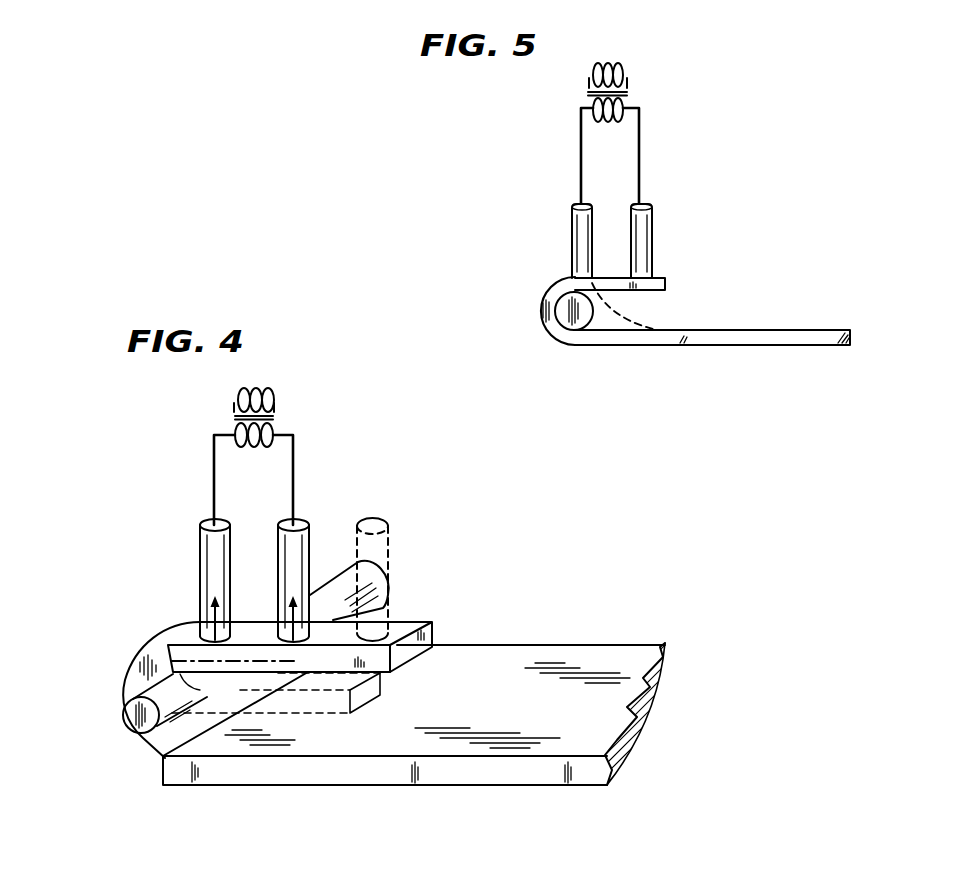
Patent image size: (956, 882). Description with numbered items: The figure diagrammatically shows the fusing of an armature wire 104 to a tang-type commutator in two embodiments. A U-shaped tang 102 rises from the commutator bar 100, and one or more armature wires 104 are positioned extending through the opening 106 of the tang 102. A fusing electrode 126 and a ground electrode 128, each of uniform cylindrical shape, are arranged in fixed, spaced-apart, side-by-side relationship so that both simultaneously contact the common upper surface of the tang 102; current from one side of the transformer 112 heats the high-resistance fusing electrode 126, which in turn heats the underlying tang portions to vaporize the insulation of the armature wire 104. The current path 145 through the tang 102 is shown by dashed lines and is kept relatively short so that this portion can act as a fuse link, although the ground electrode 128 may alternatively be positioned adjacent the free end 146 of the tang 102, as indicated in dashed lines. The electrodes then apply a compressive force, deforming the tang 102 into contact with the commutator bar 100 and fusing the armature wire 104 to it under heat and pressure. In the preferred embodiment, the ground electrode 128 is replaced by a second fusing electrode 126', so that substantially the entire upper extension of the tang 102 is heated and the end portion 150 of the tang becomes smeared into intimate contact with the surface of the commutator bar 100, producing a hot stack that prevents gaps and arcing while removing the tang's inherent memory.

In FIG. 4, the commutator bar 100 is at (510, 772).
In FIG. 5, the commutator bar 100 is at (800, 338).
In FIG. 4, the tang 102 is at (137, 662).
In FIG. 5, the tang 102 is at (665, 285).
In FIG. 4, the armature wire 104 is at (137, 727).
In FIG. 5, the armature wire 104 is at (568, 317).
In FIG. 4, the opening 106 is at (370, 663).
In FIG. 4, the transformer 112 is at (275, 417).
In FIG. 5, the transformer 112 is at (627, 92).
In FIG. 4, the fusing electrode 126 is at (213, 580).
In FIG. 5, the fusing electrode 126 is at (537, 236).
In FIG. 5, the second fusing electrode 126' is at (690, 236).
In FIG. 4, the ground electrode 128 is at (293, 566).
In FIG. 4, the current path 145 is at (165, 641).
In FIG. 4, the free end 146 is at (410, 647).
In FIG. 5, the end portion 150 is at (657, 330).